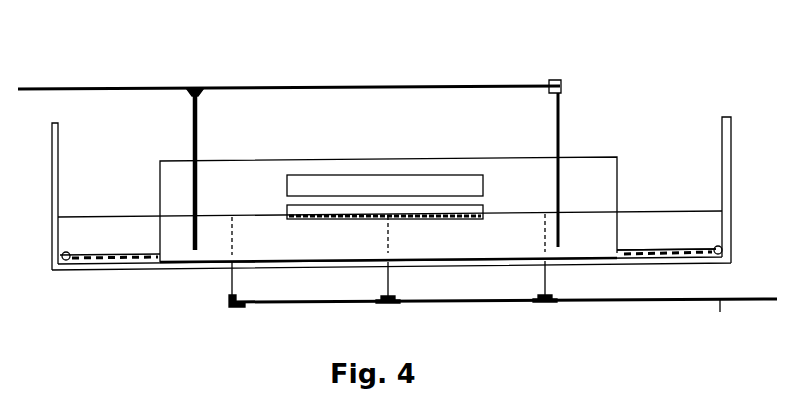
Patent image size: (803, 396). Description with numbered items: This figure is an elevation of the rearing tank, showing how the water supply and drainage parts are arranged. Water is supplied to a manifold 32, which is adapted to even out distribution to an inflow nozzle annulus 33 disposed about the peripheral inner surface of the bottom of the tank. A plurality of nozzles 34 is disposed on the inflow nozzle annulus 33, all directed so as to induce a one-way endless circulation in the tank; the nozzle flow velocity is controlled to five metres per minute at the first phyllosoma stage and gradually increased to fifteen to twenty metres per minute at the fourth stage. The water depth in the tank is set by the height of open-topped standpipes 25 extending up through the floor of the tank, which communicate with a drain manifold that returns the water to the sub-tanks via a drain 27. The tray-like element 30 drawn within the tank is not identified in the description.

The manifold 32 is at (68, 88).
The tray 30 is at (318, 160).
The inflow nozzle annulus 33 is at (668, 247).
The nozzles 34 is at (128, 262).
The standpipes 25 is at (545, 233).
The drain 27 is at (720, 300).